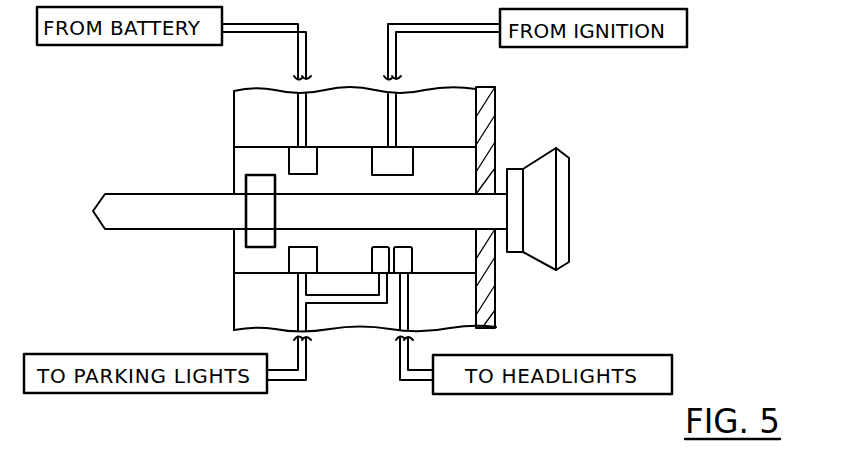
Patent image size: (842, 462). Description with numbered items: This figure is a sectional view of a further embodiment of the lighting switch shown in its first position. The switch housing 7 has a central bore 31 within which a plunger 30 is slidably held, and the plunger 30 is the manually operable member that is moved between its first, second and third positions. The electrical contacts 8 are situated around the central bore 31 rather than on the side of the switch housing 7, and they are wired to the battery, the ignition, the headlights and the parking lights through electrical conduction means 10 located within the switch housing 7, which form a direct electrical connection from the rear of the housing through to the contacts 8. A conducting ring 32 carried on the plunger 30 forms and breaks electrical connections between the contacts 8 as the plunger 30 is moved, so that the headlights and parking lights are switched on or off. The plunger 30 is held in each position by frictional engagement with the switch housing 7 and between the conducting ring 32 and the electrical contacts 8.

The switch housing 7 is at (484, 106).
The electrical contacts 8 is at (403, 258).
The electrical conduction means 10 is at (347, 299).
The plunger 30 is at (131, 201).
The central bore 31 is at (234, 258).
The conducting ring 32 is at (258, 195).